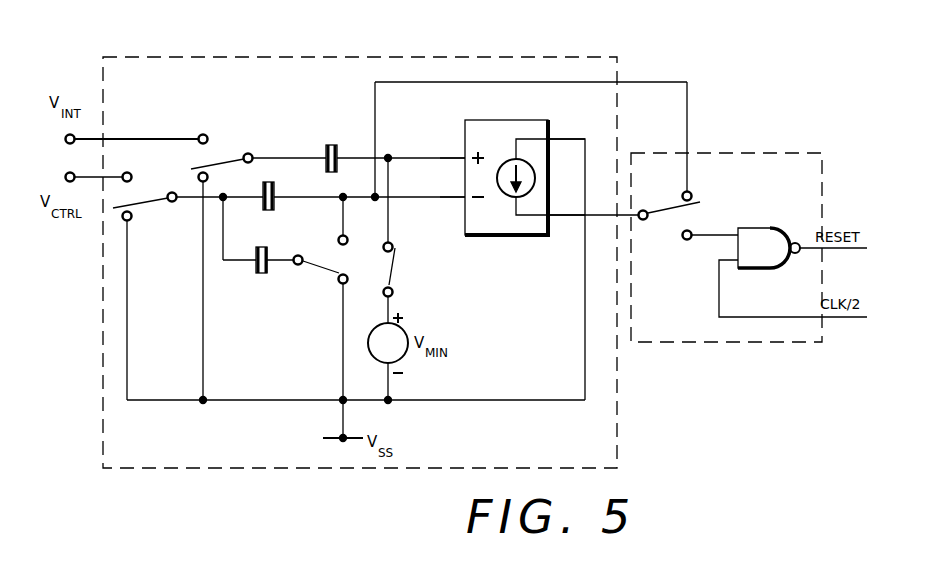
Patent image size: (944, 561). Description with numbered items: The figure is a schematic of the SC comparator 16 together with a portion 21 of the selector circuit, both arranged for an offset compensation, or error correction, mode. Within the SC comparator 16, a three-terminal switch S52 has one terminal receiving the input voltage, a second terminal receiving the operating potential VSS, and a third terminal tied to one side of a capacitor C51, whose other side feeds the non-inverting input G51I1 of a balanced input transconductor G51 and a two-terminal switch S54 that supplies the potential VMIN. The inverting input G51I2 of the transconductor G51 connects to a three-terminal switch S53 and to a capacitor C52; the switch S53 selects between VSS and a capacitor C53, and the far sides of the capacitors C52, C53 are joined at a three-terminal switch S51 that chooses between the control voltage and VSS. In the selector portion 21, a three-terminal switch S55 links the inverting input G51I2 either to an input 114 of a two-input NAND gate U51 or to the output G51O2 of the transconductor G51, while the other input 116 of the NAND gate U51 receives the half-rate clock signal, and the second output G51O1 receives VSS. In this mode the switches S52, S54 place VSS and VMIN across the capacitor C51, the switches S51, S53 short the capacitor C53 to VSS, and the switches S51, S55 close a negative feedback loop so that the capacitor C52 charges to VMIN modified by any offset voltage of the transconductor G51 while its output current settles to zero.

The SC comparator 16 is at (312, 470).
The portion of selector circuit 21 is at (756, 152).
The input of two-input NAND gate 114 is at (720, 234).
The input of two-input NAND gate 116 is at (716, 289).
The three-terminal switch S51 is at (148, 188).
The three-terminal switch S52 is at (217, 153).
The three-terminal switch S53 is at (328, 272).
The two-terminal switch S54 is at (397, 271).
The three-terminal switch S55 is at (667, 222).
The capacitor C51 is at (326, 146).
The capacitor C52 is at (271, 211).
The capacitor C53 is at (257, 276).
The balanced input transconductor G51 is at (508, 118).
The non-inverting input G51I1 is at (453, 153).
The inverting input G51I2 is at (452, 201).
The second output G51O1 is at (563, 137).
The output G51O2 is at (568, 217).
The two-input NAND gate U51 is at (758, 270).